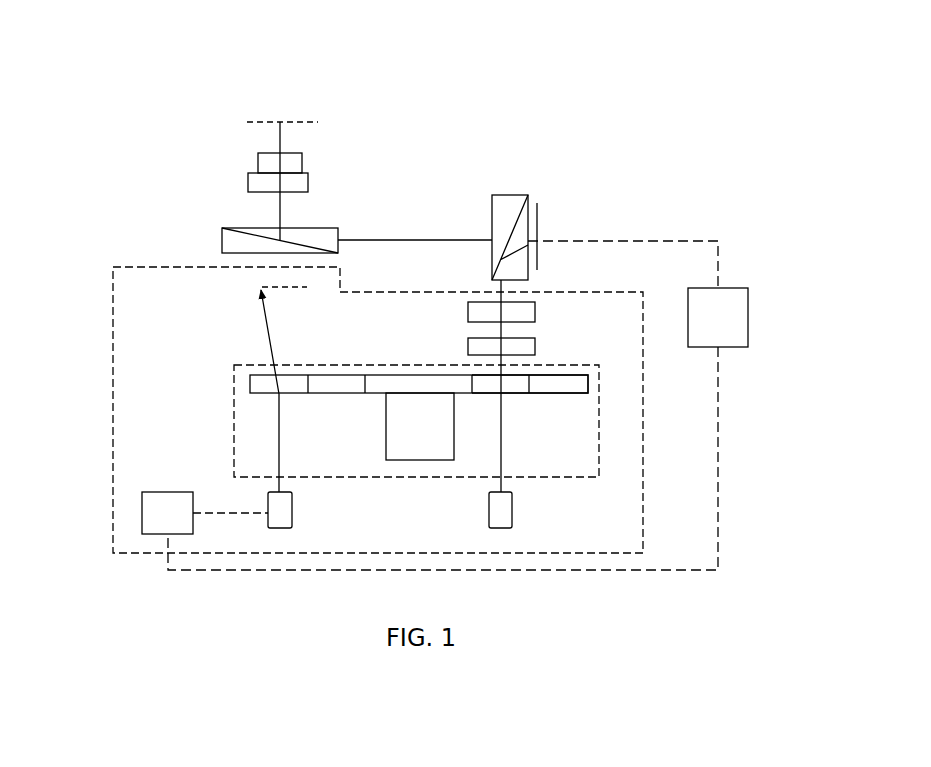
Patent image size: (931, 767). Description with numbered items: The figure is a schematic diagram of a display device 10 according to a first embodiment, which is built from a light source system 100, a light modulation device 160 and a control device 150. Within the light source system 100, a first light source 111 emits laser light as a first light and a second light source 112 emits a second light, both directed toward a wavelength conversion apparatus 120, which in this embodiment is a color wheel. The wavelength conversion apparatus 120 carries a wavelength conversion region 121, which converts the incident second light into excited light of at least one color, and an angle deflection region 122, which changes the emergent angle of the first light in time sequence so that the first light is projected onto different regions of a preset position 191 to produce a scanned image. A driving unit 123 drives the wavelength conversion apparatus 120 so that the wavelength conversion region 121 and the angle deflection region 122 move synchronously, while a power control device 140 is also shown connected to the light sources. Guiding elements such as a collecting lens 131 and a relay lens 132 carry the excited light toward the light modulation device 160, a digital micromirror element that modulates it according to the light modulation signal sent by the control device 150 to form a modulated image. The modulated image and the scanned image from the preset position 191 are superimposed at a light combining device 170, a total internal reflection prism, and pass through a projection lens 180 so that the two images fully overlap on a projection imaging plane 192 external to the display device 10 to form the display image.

The display device 10 is at (466, 42).
The light source system 100 is at (113, 431).
The projection imaging plane 192 is at (288, 119).
The projection lens 180 is at (310, 178).
The light combining device 170 is at (303, 227).
The light modulation device 160 is at (540, 224).
The control device 150 is at (750, 313).
The relay lens 132 is at (537, 312).
The collecting lens 131 is at (537, 348).
The wavelength conversion apparatus 120 is at (234, 436).
The angle deflection region 122 is at (262, 386).
The wavelength conversion region 121 is at (513, 386).
The driving unit 123 is at (386, 425).
The preset position 191 is at (247, 287).
The power control device 140 is at (142, 513).
The first light source 111 is at (294, 510).
The second light source 112 is at (514, 506).